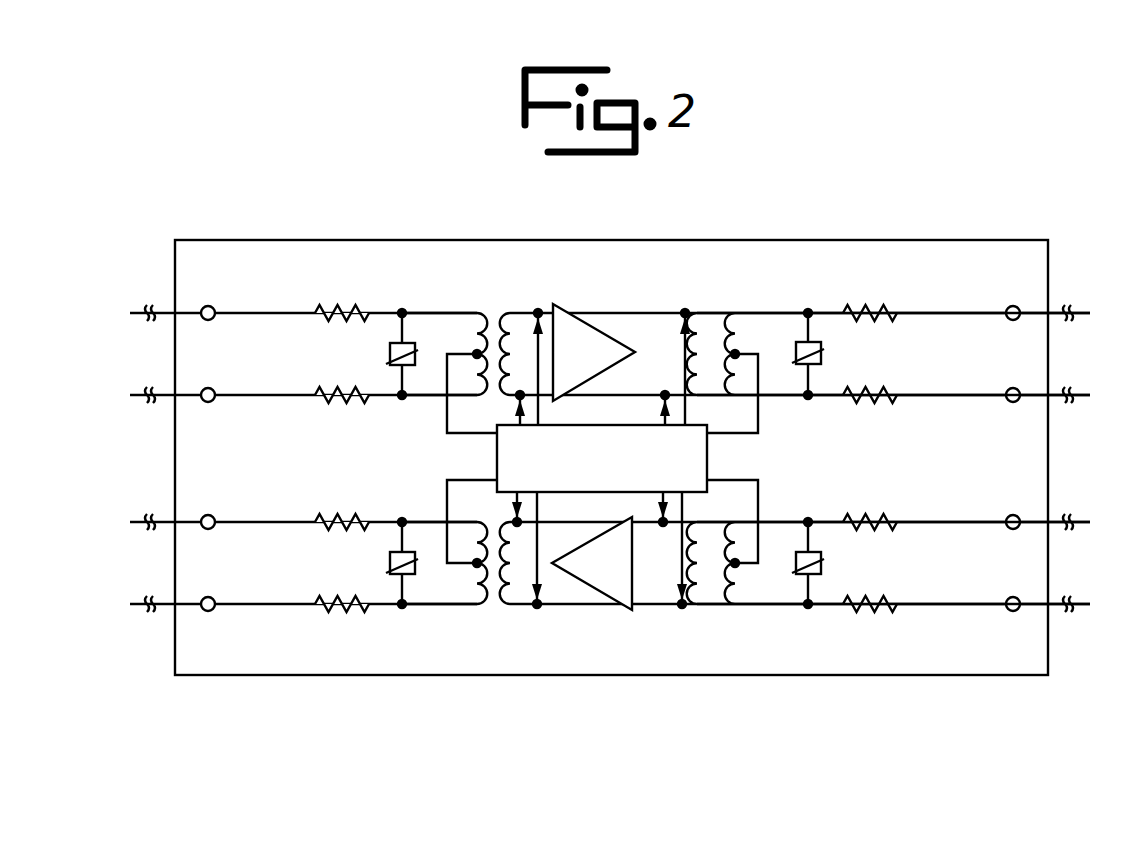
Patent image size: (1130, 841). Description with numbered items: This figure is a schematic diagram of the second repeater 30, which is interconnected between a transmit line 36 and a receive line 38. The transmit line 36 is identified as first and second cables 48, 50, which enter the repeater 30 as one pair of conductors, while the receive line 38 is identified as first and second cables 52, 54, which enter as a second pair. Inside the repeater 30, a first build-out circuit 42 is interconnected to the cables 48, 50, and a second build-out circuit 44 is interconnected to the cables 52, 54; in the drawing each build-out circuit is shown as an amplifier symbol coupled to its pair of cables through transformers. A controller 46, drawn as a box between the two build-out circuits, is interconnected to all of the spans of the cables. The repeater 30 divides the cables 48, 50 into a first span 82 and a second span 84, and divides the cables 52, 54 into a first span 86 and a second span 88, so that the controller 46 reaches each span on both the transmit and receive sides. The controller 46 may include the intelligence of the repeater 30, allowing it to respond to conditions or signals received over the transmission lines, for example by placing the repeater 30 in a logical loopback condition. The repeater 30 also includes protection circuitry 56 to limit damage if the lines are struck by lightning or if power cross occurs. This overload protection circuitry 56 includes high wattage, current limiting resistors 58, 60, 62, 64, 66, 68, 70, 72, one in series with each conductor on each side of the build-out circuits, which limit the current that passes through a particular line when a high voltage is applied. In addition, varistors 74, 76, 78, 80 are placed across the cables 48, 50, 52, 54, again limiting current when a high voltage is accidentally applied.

The second repeater 30 is at (958, 240).
The transmit line 36 is at (118, 355).
The receive line 38 is at (118, 565).
The first build-out circuit 42 is at (608, 329).
The second build-out circuit 44 is at (592, 550).
The controller 46 is at (707, 445).
The first cable 48 is at (233, 313).
The second cable 50 is at (233, 395).
The first cable 52 is at (235, 522).
The second cable 54 is at (242, 604).
The protection circuitry 56 is at (928, 370).
The current limiting resistor 58 is at (350, 313).
The current limiting resistor 60 is at (870, 313).
The current limiting resistor 62 is at (345, 395).
The current limiting resistor 64 is at (865, 395).
The current limiting resistor 66 is at (326, 522).
The current limiting resistor 68 is at (870, 522).
The current limiting resistor 70 is at (335, 604).
The current limiting resistor 72 is at (862, 604).
The varistor 74 is at (392, 350).
The varistor 76 is at (822, 352).
The varistor 78 is at (392, 558).
The varistor 80 is at (822, 560).
The first span 82 is at (268, 346).
The second span 84 is at (927, 344).
The first span 86 is at (943, 572).
The second span 88 is at (283, 576).